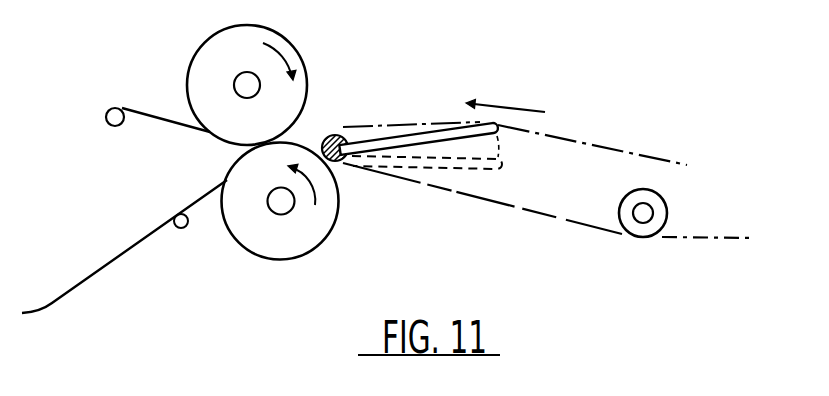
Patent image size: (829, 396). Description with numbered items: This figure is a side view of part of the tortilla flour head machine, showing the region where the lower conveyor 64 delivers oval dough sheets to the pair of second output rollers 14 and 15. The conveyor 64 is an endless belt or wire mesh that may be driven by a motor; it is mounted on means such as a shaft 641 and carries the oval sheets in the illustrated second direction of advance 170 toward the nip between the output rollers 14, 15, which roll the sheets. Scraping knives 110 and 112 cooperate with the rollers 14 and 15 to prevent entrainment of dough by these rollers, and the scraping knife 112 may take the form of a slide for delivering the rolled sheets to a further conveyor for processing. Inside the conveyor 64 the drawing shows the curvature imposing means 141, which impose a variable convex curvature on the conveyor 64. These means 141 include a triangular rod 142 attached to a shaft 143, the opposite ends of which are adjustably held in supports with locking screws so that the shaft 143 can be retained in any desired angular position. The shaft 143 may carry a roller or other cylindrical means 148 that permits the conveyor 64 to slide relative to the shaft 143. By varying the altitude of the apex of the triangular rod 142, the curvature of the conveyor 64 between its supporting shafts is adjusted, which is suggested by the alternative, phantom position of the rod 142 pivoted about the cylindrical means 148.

The output roller 14 is at (220, 40).
The output roller 15 is at (252, 237).
The scraping knife 110 is at (160, 113).
The scraping knife 112 is at (105, 263).
The cylindrical means 148 is at (328, 131).
The triangular rod 142 is at (421, 133).
The curvature imposing means 141 is at (368, 137).
The shaft 143 is at (349, 166).
The direction of advance 170 is at (508, 101).
The conveyor 64 is at (623, 148).
The shaft 641 is at (664, 210).